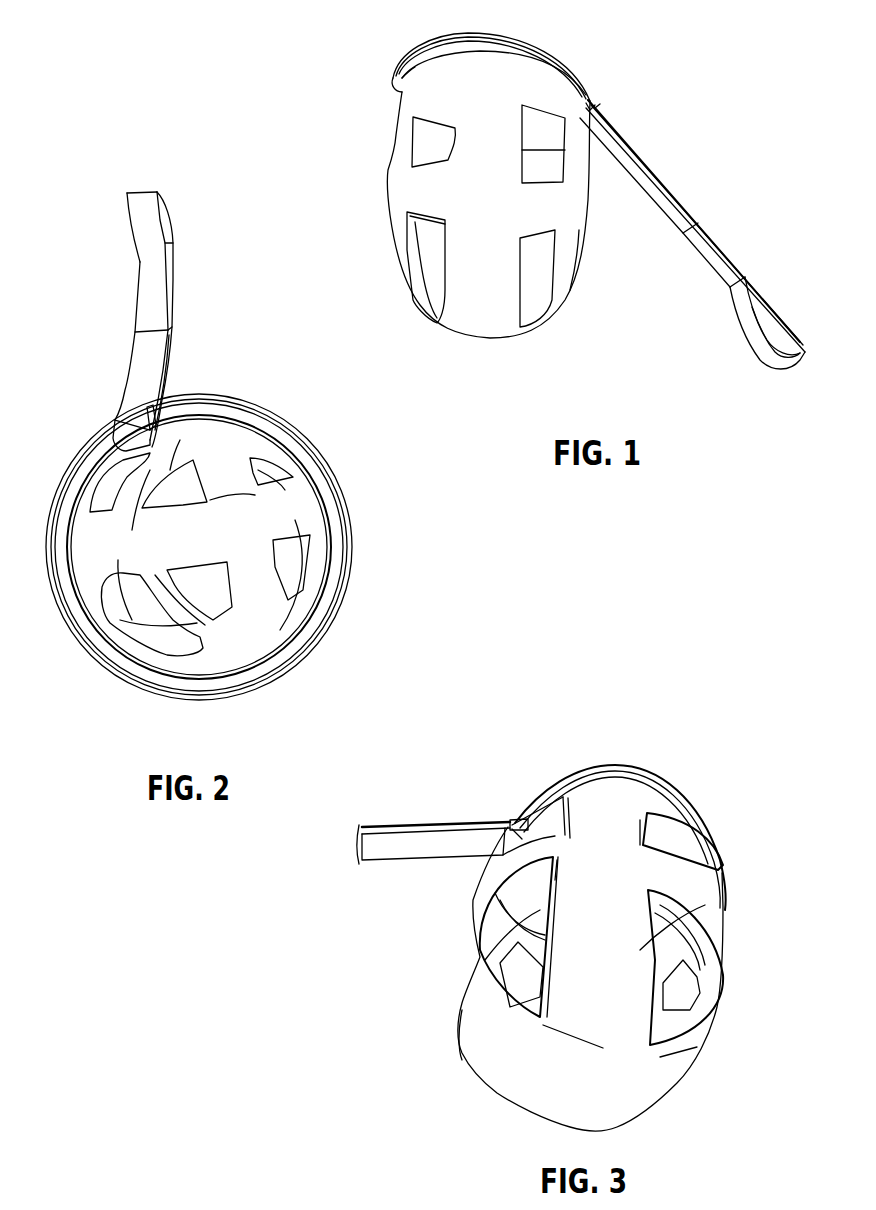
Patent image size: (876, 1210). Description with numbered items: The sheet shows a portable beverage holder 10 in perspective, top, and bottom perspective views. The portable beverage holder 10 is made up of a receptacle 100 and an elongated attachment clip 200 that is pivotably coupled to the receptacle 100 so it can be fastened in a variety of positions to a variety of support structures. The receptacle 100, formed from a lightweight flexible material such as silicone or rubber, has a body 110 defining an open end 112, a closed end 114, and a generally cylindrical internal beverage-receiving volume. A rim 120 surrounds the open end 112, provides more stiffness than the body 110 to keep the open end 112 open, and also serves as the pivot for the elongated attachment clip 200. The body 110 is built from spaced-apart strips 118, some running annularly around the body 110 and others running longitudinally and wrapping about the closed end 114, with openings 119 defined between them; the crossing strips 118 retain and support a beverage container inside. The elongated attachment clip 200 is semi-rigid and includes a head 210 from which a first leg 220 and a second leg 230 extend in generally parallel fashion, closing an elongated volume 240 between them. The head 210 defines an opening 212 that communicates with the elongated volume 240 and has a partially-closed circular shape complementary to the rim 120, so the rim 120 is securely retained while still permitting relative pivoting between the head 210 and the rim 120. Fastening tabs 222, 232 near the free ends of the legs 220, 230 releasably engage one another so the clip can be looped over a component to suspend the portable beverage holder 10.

In FIG. 1, the portable beverage holder 10 is at (547, 354).
In FIG. 2, the portable beverage holder 10 is at (320, 669).
In FIG. 3, the portable beverage holder 10 is at (652, 742).
In FIG. 1, the receptacle 100 is at (370, 189).
In FIG. 2, the receptacle 100 is at (290, 406).
In FIG. 3, the receptacle 100 is at (658, 1135).
In FIG. 1, the body 110 is at (562, 277).
In FIG. 2, the body 110 is at (295, 540).
In FIG. 3, the body 110 is at (580, 980).
In FIG. 1, the open end 112 is at (455, 52).
In FIG. 2, the open end 112 is at (320, 484).
In FIG. 3, the open end 112 is at (558, 808).
In FIG. 1, the closed end 114 is at (550, 308).
In FIG. 3, the closed end 114 is at (493, 1078).
In FIG. 1, the strips 118 is at (554, 215).
In FIG. 2, the strips 118 is at (197, 600).
In FIG. 3, the strips 118 is at (660, 905).
In FIG. 1, the openings 119 is at (424, 255).
In FIG. 2, the openings 119 is at (275, 468).
In FIG. 3, the openings 119 is at (520, 968).
In FIG. 1, the rim 120 is at (538, 46).
In FIG. 2, the rim 120 is at (118, 680).
In FIG. 3, the rim 120 is at (680, 787).
In FIG. 1, the elongated attachment clip 200 is at (737, 198).
In FIG. 2, the elongated attachment clip 200 is at (117, 395).
In FIG. 3, the elongated attachment clip 200 is at (450, 815).
In FIG. 1, the head 210 is at (597, 95).
In FIG. 2, the head 210 is at (116, 432).
In FIG. 3, the head 210 is at (511, 822).
In FIG. 1, the opening 212 is at (597, 108).
In FIG. 2, the opening 212 is at (162, 405).
In FIG. 3, the opening 212 is at (512, 840).
In FIG. 1, the first leg 220 is at (661, 182).
In FIG. 2, the first leg 220 is at (135, 344).
In FIG. 3, the first leg 220 is at (380, 828).
In FIG. 1, the fastening tab 222 is at (793, 310).
In FIG. 2, the fastening tab 222 is at (135, 212).
In FIG. 1, the second leg 230 is at (661, 195).
In FIG. 2, the second leg 230 is at (168, 341).
In FIG. 1, the fastening tab 232 is at (763, 348).
In FIG. 2, the fastening tab 232 is at (174, 253).
In FIG. 2, the elongated volume 240 is at (163, 377).
In FIG. 3, the elongated volume 240 is at (420, 826).